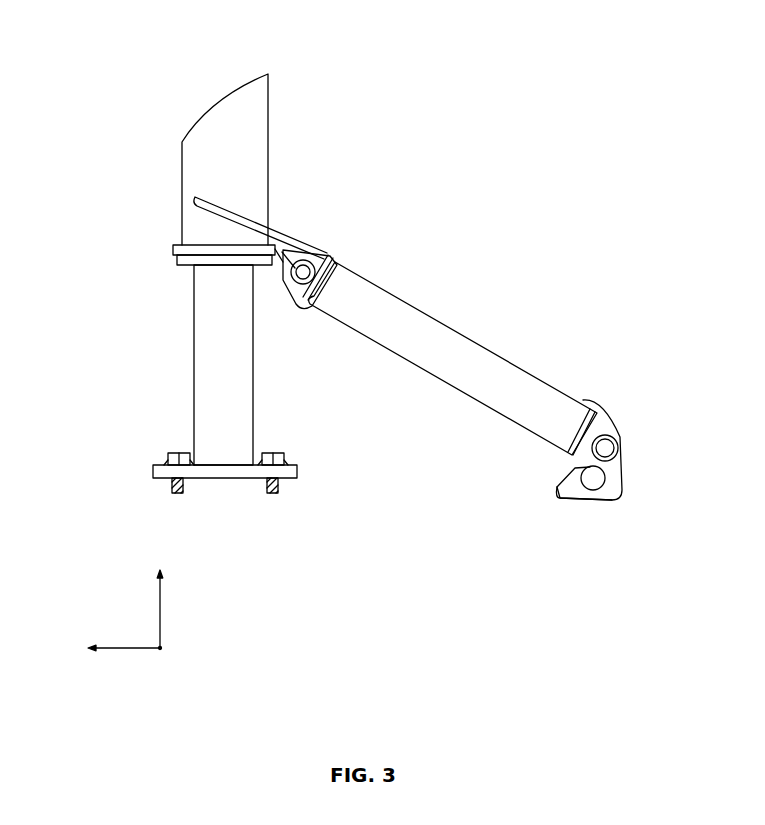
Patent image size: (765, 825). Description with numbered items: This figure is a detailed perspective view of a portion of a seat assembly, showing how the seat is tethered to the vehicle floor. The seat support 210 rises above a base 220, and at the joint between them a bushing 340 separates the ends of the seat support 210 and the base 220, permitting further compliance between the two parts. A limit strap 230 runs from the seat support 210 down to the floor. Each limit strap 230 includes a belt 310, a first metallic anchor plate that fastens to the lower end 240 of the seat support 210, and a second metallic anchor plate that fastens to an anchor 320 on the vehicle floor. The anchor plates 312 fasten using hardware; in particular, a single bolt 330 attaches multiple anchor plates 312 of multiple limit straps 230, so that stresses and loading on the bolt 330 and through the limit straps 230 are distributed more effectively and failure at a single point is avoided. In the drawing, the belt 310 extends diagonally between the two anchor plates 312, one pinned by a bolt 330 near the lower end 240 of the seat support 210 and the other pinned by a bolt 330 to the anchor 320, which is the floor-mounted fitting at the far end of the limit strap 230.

The seat support 210 is at (293, 110).
The lower end 240 is at (183, 228).
The bushing 340 is at (177, 286).
The base 220 is at (194, 411).
The limit strap 230 is at (526, 198).
The belt 310 is at (443, 337).
The anchor plates 312 is at (614, 300).
The bolt 330 is at (309, 309).
The anchor 320 is at (634, 468).